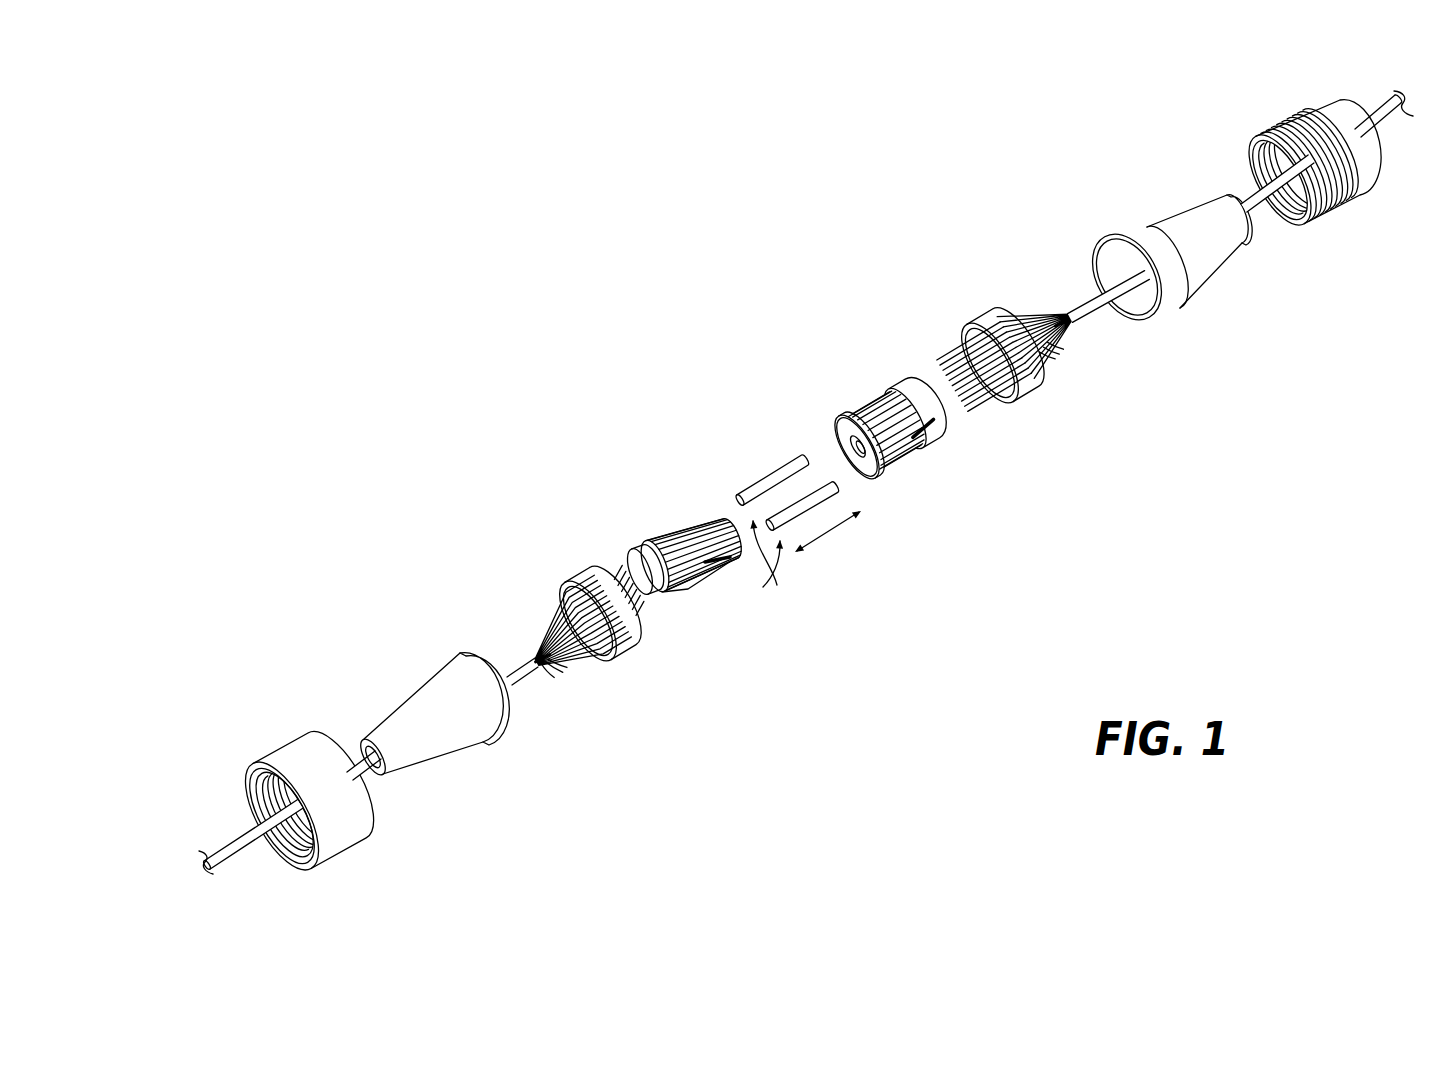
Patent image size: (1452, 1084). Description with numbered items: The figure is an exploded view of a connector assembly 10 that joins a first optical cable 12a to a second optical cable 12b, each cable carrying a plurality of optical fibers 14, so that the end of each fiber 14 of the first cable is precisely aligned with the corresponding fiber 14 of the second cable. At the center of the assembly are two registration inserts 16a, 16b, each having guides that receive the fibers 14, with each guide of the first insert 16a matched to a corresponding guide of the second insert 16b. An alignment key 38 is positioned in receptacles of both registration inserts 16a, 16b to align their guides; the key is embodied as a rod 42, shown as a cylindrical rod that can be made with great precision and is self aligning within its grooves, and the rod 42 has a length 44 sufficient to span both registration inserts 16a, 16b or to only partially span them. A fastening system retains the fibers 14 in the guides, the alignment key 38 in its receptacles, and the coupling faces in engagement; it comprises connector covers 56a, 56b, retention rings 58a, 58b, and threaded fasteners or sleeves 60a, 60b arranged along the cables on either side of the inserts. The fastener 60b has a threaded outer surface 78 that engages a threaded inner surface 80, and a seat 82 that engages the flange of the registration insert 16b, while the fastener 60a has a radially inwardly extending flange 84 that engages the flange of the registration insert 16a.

The connector assembly 10 is at (628, 338).
The first optical cable 12a is at (229, 848).
The second optical cable 12b is at (1392, 125).
The optical fibers 14 is at (553, 663).
The first registration insert 16a is at (652, 526).
The second registration insert 16b is at (854, 405).
The alignment key 38 is at (763, 587).
The rod 42 is at (801, 507).
The length 44 is at (830, 529).
The first connector cover 56a is at (418, 698).
The second connector cover 56b is at (1137, 228).
The first retention ring 58a is at (591, 581).
The second retention ring 58b is at (993, 330).
The first threaded fastener 60a is at (278, 758).
The second threaded fastener 60b is at (1294, 143).
The threaded outer surface 78 is at (1311, 106).
The threaded inner surface 80 is at (262, 807).
The seat 82 is at (1291, 218).
The flange 84 is at (284, 847).